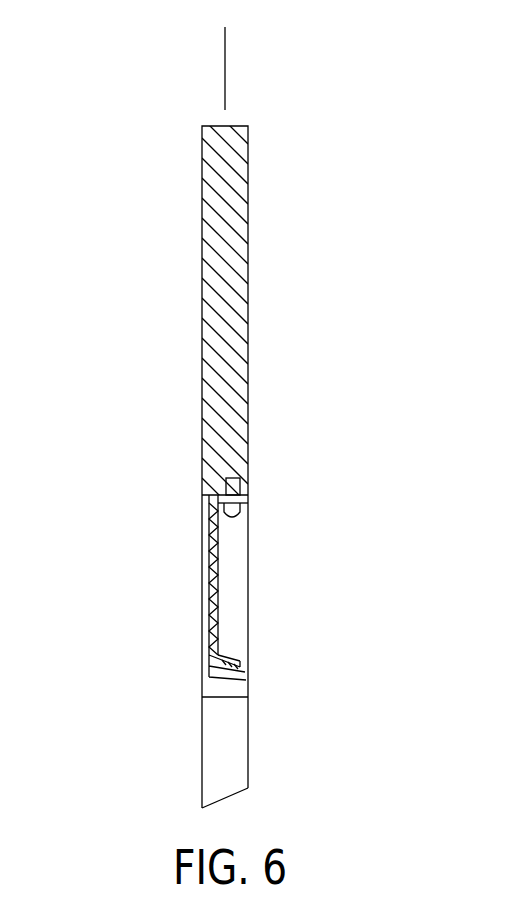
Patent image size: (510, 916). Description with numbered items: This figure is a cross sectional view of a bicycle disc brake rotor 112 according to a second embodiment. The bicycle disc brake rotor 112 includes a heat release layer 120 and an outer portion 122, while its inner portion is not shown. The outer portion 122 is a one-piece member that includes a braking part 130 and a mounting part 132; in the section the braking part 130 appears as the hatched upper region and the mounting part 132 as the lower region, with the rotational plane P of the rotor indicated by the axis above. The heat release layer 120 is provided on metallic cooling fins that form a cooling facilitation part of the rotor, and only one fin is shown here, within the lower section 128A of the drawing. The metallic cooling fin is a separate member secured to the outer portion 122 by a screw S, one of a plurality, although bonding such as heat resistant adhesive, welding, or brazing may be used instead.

The bicycle disc brake rotor 112 is at (131, 258).
The outer portion 122 is at (253, 333).
The braking part 130 is at (225, 225).
The heat release layer 120 is at (213, 552).
The lower section 128A is at (199, 608).
The screw S is at (233, 514).
The mounting part 132 is at (225, 750).
The rotational plane P is at (225, 42).